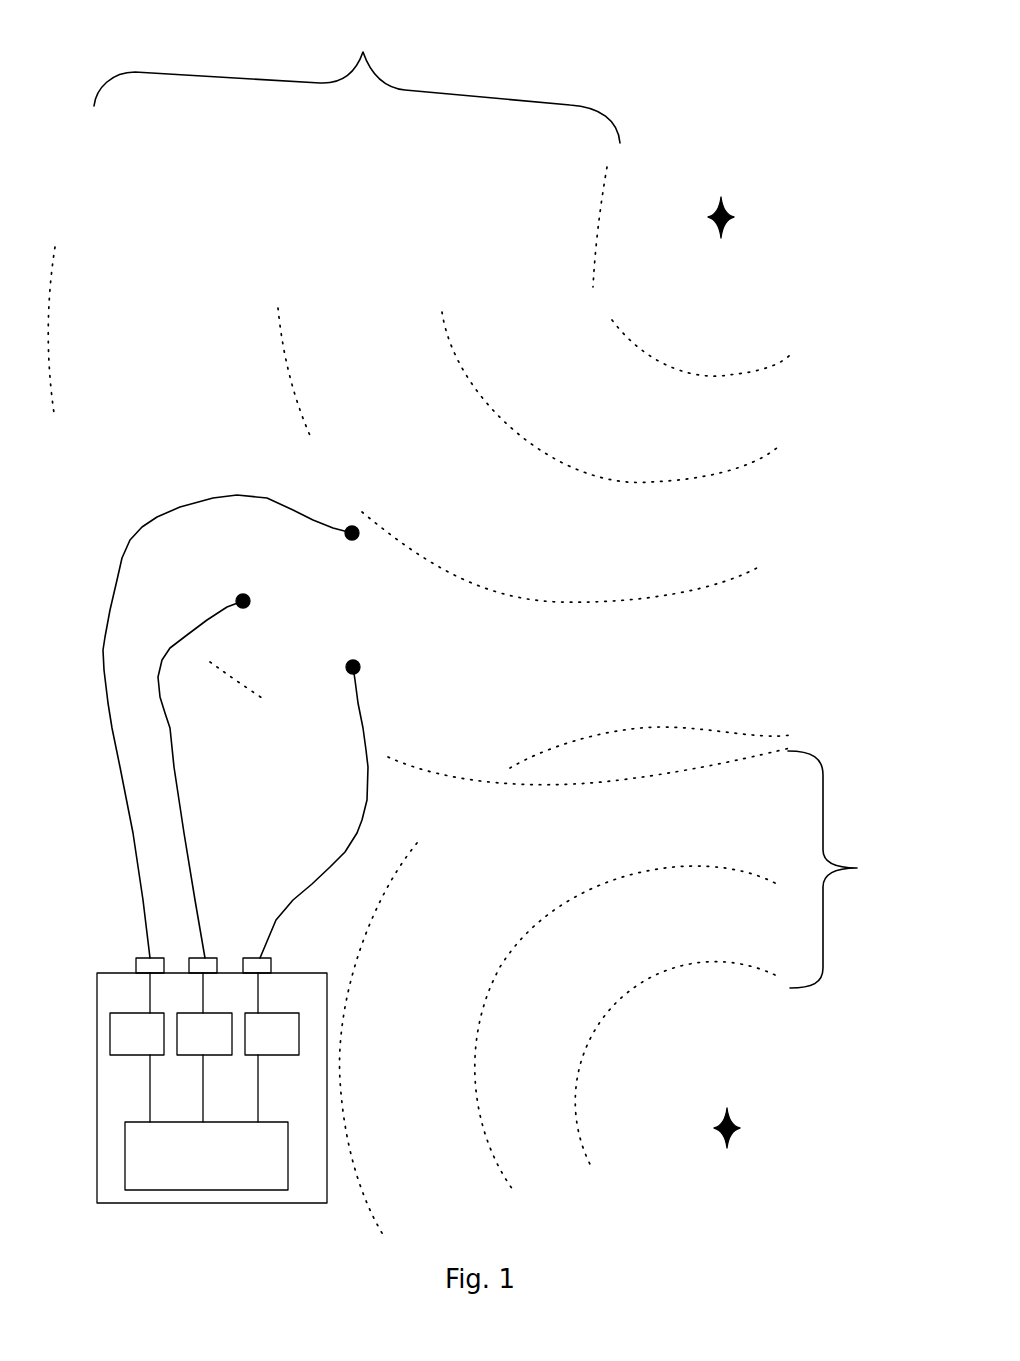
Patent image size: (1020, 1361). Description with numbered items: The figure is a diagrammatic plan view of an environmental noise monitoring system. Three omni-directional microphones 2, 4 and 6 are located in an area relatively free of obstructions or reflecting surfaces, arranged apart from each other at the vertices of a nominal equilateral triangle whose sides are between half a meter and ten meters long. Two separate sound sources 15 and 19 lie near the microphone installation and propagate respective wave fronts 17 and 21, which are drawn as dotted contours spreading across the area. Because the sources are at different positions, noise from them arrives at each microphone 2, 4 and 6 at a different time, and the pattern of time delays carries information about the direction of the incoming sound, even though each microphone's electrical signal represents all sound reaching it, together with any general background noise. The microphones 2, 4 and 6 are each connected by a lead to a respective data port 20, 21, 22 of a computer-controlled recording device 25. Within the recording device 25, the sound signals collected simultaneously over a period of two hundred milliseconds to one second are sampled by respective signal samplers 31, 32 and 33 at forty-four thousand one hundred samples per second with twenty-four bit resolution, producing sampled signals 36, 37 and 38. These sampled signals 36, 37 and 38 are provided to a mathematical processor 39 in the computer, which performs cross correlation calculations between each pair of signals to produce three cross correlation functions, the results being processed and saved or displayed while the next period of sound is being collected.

The omni-directional microphone 2 is at (204, 767).
The omni-directional microphone 4 is at (231, 727).
The omni-directional microphone 6 is at (322, 809).
The sound source 15 is at (748, 217).
The wave front 17 is at (357, 74).
The sound source 19 is at (753, 1128).
The data port 20 is at (218, 960).
The data port / wave front 21 is at (108, 918).
The data port 22 is at (270, 960).
The computer-controlled recording device 25 is at (152, 1216).
The signal sampler 31 is at (204, 1034).
The signal sampler 32 is at (137, 1034).
The signal sampler 33 is at (272, 1034).
The sampled signal 36 is at (190, 1081).
The sampled signal 37 is at (138, 1083).
The sampled signal 38 is at (246, 1093).
The mathematical processor 39 is at (206, 1156).